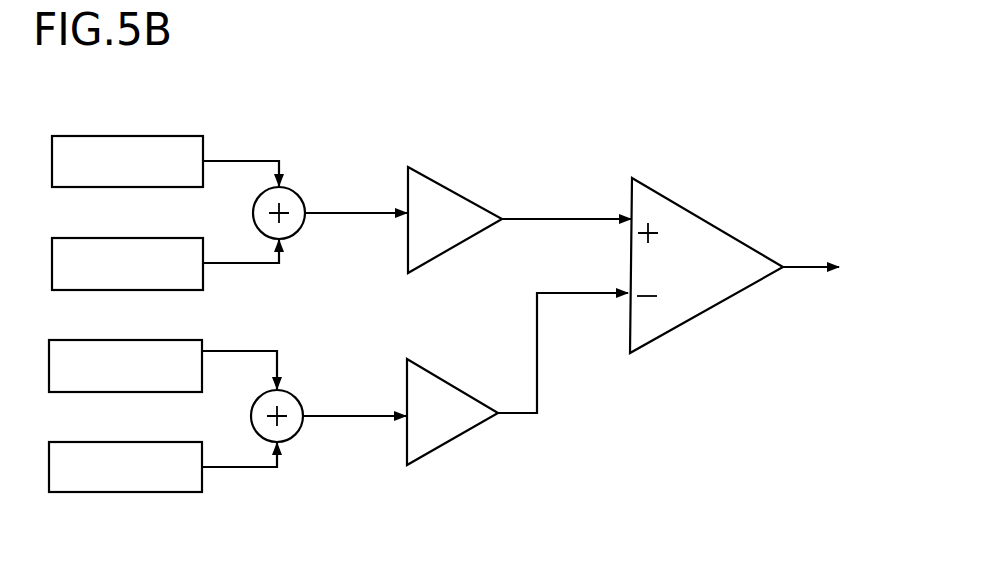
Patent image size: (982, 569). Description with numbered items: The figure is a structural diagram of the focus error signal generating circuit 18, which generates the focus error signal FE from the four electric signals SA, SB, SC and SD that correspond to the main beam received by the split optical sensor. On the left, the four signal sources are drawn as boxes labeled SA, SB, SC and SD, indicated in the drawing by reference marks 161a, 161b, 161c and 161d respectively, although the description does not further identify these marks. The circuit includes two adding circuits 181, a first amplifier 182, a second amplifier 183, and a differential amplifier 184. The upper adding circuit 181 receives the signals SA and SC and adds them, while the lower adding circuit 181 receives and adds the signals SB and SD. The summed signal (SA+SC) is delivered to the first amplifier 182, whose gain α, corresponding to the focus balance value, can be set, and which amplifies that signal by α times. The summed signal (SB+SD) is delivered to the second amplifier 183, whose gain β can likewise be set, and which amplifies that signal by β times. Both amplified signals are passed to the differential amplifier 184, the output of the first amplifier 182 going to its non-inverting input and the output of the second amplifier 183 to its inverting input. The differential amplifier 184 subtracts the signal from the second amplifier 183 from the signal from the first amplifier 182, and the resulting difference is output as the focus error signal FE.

The focus error signal generating circuit 18 is at (604, 116).
The light receiving element SA 161a is at (137, 136).
The light receiving element SB 161b is at (137, 340).
The light receiving element SC 161c is at (137, 238).
The light receiving element SD 161d is at (135, 442).
The adding circuit 181 is at (300, 190).
The first amplifier 182 is at (458, 190).
The second amplifier 183 is at (458, 385).
The differential amplifier 184 is at (715, 222).